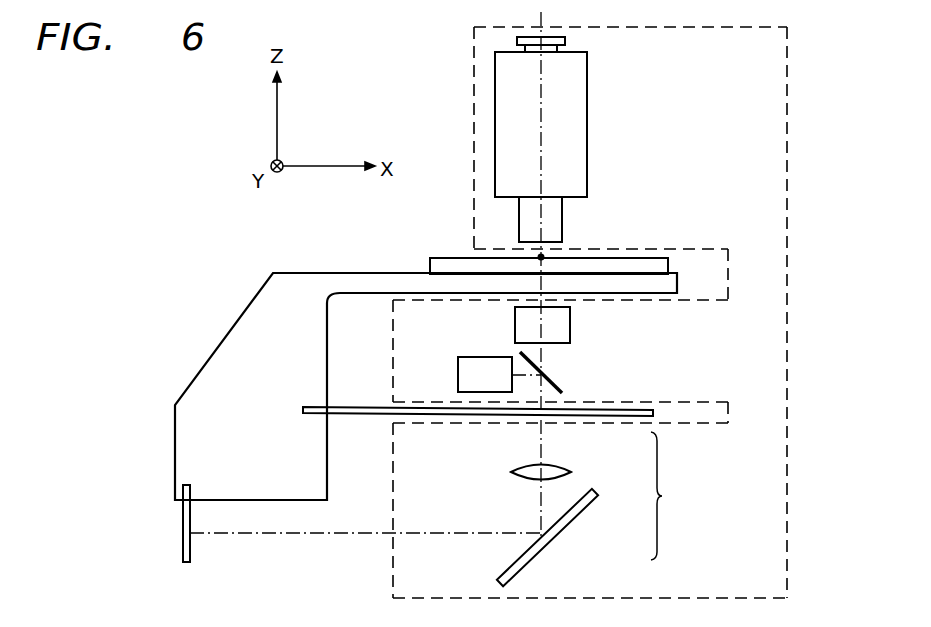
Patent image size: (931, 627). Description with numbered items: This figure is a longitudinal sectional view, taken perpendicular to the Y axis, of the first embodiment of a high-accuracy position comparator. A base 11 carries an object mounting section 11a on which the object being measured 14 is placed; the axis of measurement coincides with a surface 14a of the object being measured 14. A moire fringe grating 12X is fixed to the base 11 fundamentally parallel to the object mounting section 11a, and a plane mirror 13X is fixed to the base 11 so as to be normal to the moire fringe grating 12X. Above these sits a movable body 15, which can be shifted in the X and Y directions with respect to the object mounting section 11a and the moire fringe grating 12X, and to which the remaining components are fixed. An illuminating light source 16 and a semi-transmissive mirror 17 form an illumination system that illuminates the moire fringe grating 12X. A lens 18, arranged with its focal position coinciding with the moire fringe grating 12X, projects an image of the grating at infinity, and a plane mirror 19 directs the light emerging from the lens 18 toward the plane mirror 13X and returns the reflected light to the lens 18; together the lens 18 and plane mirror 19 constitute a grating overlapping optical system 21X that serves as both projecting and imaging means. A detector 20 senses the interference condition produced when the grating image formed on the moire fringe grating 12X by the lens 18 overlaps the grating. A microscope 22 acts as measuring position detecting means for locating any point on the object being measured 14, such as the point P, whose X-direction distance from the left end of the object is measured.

The base 11 is at (222, 350).
The object mounting section 11a is at (369, 273).
The moire fringe grating 12X is at (636, 403).
The plane mirror 13X is at (192, 541).
The object being measured 14 is at (450, 258).
The surface of the object being measured 14a is at (638, 258).
The movable body 15 is at (791, 62).
The illuminating light source 16 is at (470, 368).
The semi-transmissive mirror 17 is at (556, 378).
The lens 18 is at (562, 469).
The plane mirror 19 is at (573, 520).
The detector 20 is at (555, 318).
The grating overlapping optical system 21X is at (679, 496).
The microscope 22 is at (588, 88).
The point P is at (541, 257).